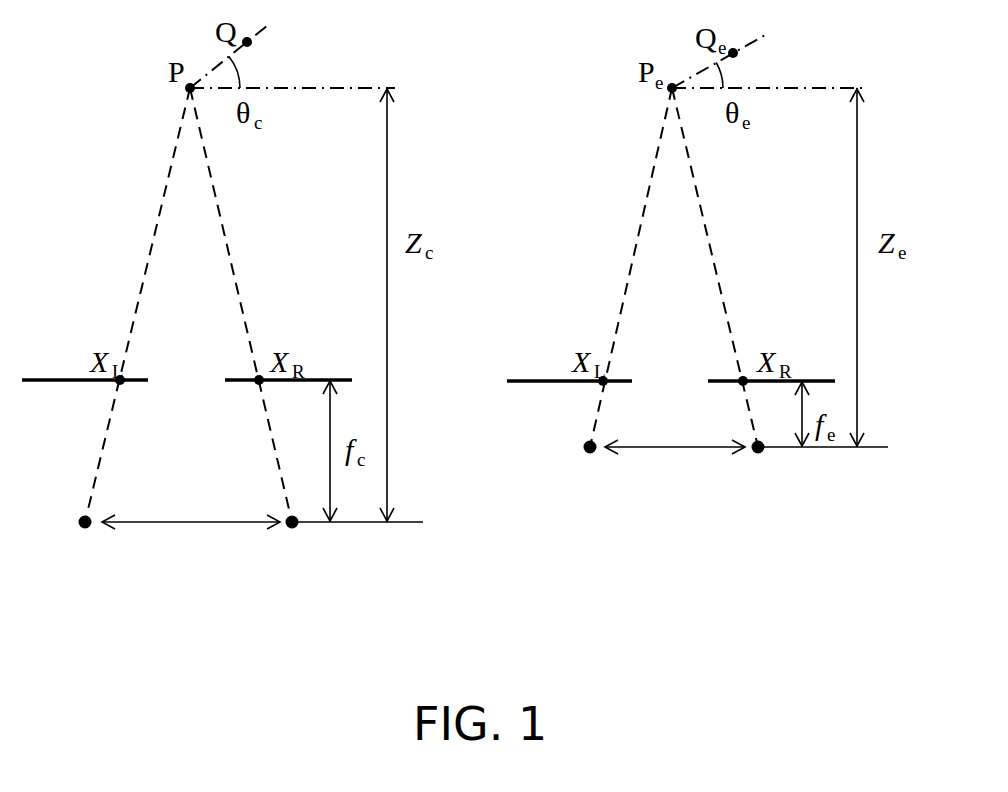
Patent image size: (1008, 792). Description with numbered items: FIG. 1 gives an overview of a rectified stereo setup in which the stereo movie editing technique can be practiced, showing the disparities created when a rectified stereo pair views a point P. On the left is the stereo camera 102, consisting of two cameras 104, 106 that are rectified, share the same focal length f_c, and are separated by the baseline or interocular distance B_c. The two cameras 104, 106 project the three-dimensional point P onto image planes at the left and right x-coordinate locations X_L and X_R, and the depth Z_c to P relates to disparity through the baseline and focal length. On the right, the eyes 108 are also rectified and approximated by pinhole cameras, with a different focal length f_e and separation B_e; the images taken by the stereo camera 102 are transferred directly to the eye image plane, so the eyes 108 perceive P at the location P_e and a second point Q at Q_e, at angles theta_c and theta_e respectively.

The stereo camera 102 is at (183, 560).
The camera 104 is at (83, 526).
The camera 106 is at (292, 529).
The eyes 108 is at (750, 506).